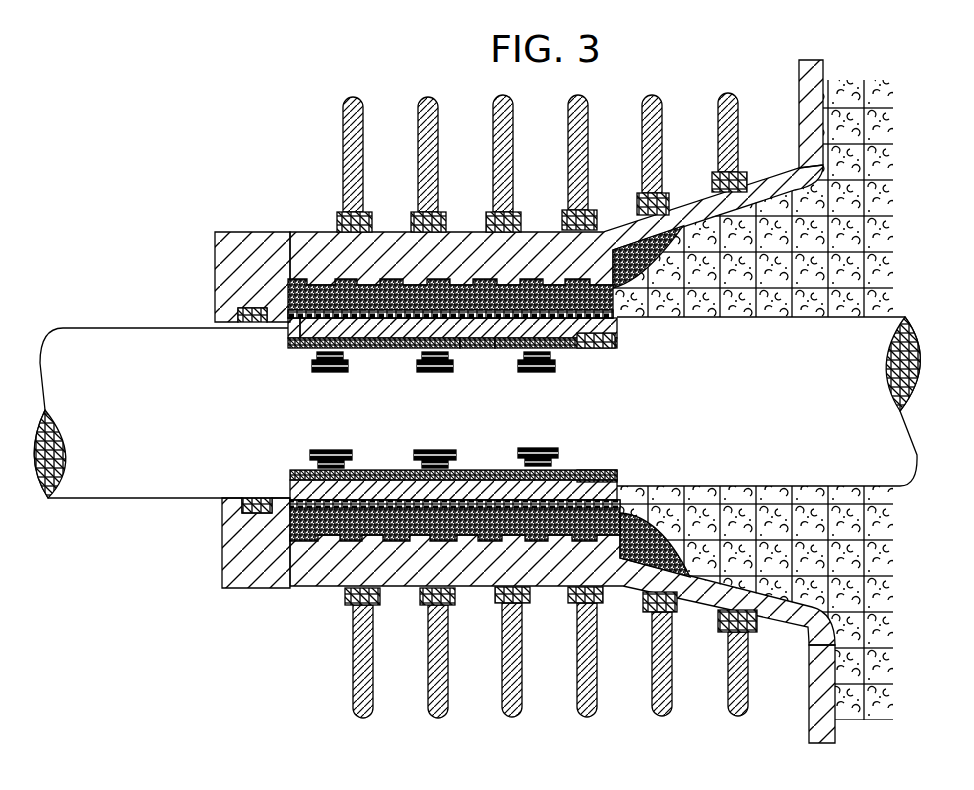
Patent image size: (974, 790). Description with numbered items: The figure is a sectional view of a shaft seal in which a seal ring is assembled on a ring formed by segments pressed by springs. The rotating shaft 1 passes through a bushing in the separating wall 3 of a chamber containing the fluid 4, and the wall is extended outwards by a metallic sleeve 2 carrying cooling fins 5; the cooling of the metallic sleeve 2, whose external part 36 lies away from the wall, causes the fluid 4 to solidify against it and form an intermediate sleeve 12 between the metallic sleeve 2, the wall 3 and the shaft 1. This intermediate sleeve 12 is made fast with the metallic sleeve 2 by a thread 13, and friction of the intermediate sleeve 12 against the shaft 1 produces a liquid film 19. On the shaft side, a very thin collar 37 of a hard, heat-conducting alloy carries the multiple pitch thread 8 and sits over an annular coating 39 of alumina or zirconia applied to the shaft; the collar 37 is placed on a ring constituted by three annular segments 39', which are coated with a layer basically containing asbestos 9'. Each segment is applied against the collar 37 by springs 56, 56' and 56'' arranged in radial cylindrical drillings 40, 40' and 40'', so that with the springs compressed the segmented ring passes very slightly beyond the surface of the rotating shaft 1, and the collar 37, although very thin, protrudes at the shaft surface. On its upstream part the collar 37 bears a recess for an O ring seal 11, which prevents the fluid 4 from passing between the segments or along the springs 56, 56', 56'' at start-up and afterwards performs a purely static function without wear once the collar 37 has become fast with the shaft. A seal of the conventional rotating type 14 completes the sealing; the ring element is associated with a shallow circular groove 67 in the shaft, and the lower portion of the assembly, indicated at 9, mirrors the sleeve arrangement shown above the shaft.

The rotating shaft 1 is at (168, 358).
The metallic sleeve 2 is at (768, 192).
The separating wall 3 is at (810, 112).
The fluid 4 is at (863, 220).
The cooling fins 5 is at (420, 153).
The multiple pitch thread 8 is at (387, 353).
The lower sleeve 9 is at (453, 553).
The asbestos layer 9' is at (266, 361).
The O ring seal 11 is at (583, 348).
The intermediate sleeve 12 is at (632, 245).
The thread 13 is at (533, 282).
The rotating seal 14 is at (253, 308).
The liquid film 19 is at (463, 297).
The external part of the sleeve 36 is at (215, 274).
The collar 37 is at (508, 352).
The annular coating 39 is at (477, 376).
The annular segments 39' is at (453, 555).
The radial cylindrical drilling 40 is at (353, 410).
The radial cylindrical drilling 40' is at (448, 410).
The radial cylindrical drilling 40'' is at (520, 409).
The spring 56 is at (324, 410).
The spring 56' is at (426, 409).
The spring 56'' is at (549, 405).
The shallow circular groove 67 is at (617, 334).